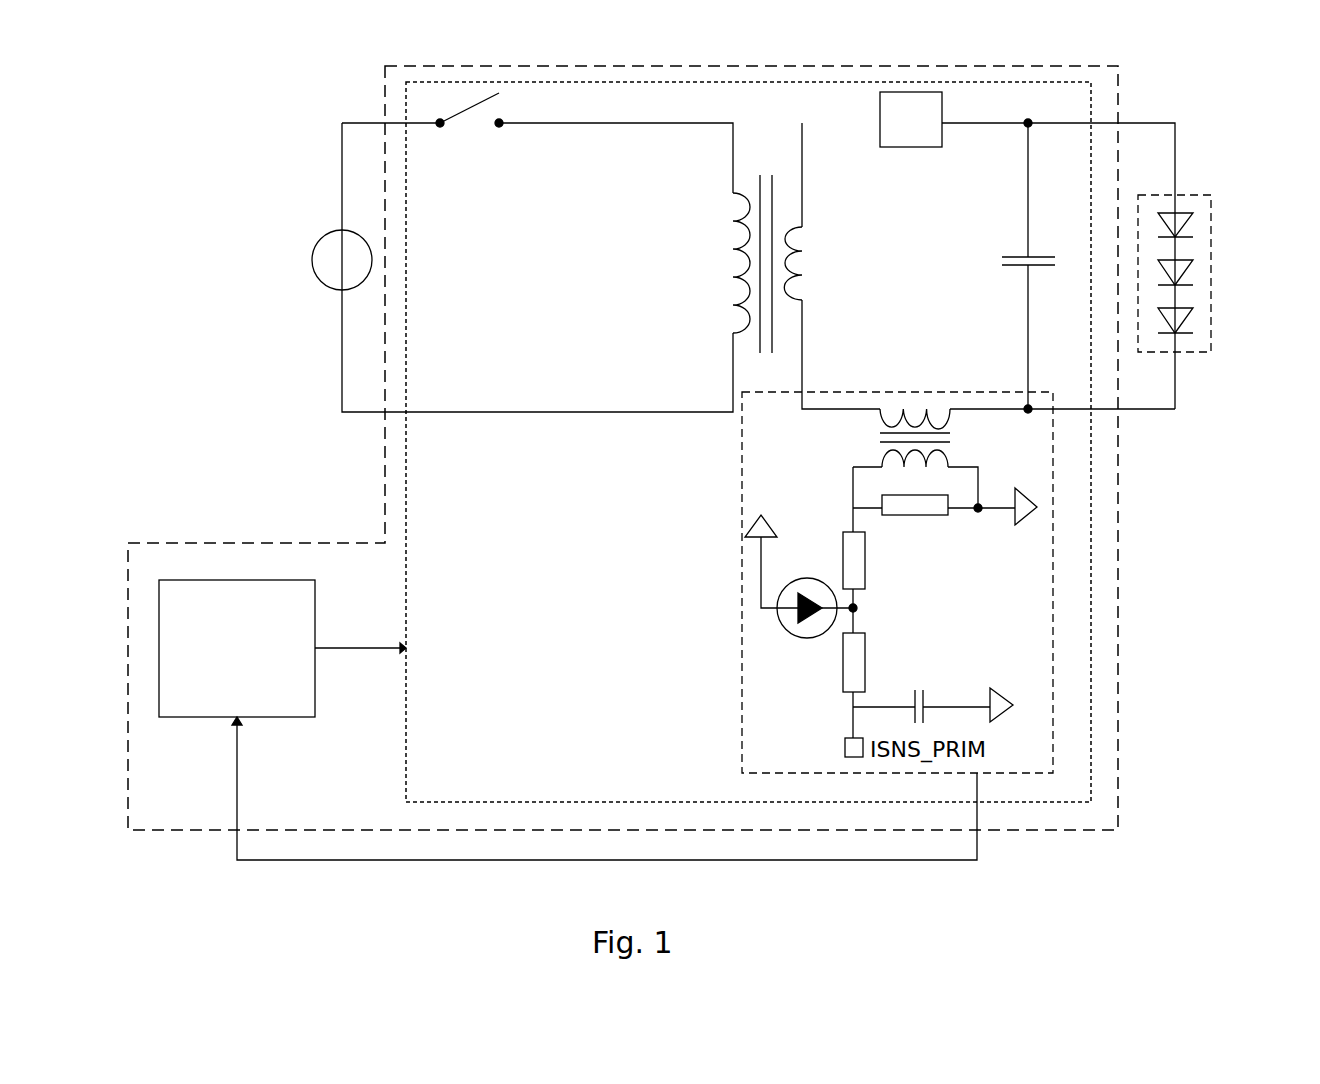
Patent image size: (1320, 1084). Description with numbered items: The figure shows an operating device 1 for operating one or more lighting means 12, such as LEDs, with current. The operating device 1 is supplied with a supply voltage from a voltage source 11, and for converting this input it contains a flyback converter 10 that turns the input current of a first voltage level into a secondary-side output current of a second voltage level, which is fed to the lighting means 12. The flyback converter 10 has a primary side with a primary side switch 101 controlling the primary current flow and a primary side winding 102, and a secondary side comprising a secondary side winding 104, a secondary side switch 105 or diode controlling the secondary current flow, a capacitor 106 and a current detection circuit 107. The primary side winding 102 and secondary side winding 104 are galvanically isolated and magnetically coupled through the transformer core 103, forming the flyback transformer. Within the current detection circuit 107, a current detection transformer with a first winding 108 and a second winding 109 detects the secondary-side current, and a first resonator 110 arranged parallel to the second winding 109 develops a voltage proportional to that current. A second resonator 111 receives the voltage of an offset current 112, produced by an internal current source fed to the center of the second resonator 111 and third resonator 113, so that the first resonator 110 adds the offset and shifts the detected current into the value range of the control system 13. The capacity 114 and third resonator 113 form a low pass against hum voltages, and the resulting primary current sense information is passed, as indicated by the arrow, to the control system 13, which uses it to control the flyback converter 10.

The operating device 1 is at (1118, 100).
The flyback converter 10 is at (405, 192).
The voltage source 11 is at (312, 260).
The lighting means 12 is at (1180, 195).
The control system 13 is at (205, 718).
The primary side switch 101 is at (450, 128).
The primary side winding 102 is at (748, 207).
The transformer core 103 is at (767, 163).
The secondary side winding 104 is at (800, 242).
The secondary side switch 105 is at (895, 147).
The capacitor 106 is at (1015, 262).
The current detection circuit 107 is at (940, 392).
The first winding 108 is at (880, 410).
The second winding 109 is at (882, 455).
The first resonator 110 is at (920, 515).
The second resonator 111 is at (865, 550).
The offset current 112 is at (822, 635).
The third resonator 113 is at (865, 670).
The capacity 114 is at (922, 698).